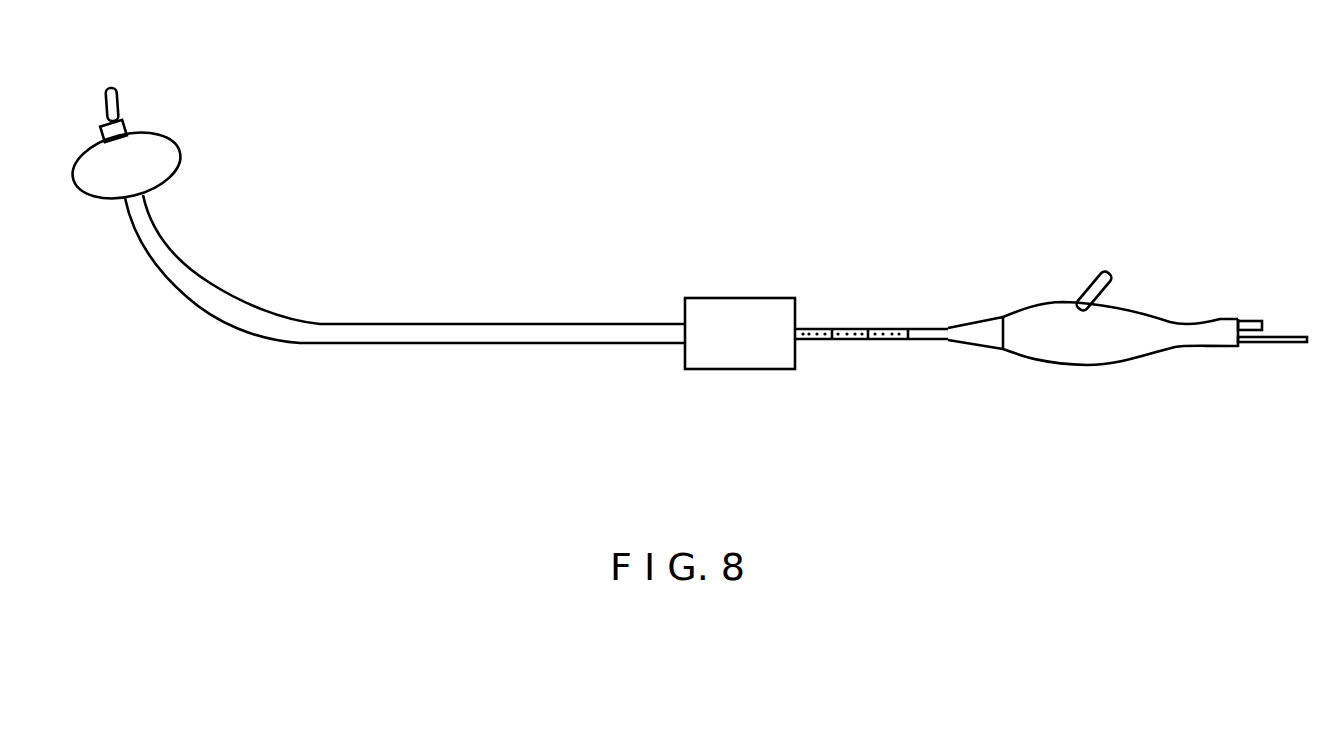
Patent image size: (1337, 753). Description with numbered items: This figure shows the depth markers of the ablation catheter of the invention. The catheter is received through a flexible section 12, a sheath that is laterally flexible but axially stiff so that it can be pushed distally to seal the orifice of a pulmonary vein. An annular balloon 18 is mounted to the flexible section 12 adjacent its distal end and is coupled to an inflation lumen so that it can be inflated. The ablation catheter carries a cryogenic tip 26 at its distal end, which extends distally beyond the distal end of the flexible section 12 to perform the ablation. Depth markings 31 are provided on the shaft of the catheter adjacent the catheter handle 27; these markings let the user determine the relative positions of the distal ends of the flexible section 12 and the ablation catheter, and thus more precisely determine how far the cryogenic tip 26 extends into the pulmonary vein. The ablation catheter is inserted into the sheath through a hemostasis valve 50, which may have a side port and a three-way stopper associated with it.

The flexible section 12 is at (355, 323).
The annular balloon 18 is at (170, 163).
The cryogenic tip 26 is at (118, 100).
The catheter handle 27 is at (1075, 365).
The depth markings 31 is at (872, 327).
The hemostasis valve 50 is at (712, 298).